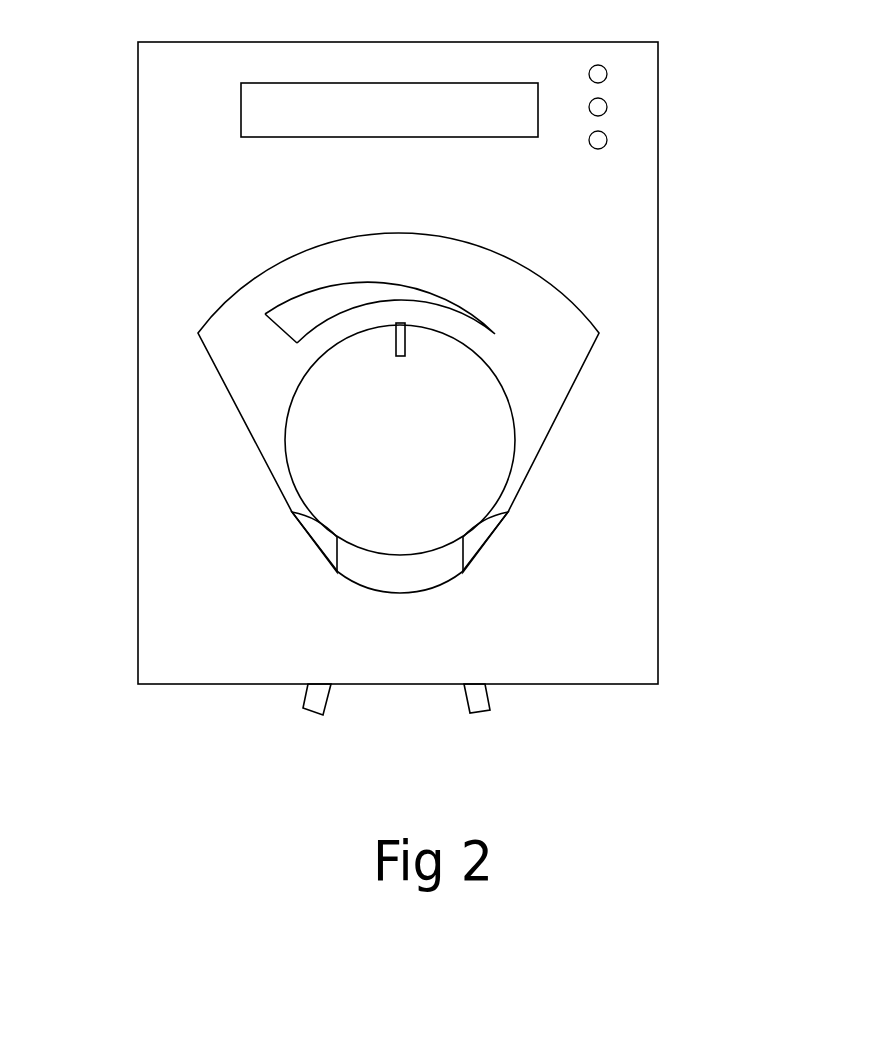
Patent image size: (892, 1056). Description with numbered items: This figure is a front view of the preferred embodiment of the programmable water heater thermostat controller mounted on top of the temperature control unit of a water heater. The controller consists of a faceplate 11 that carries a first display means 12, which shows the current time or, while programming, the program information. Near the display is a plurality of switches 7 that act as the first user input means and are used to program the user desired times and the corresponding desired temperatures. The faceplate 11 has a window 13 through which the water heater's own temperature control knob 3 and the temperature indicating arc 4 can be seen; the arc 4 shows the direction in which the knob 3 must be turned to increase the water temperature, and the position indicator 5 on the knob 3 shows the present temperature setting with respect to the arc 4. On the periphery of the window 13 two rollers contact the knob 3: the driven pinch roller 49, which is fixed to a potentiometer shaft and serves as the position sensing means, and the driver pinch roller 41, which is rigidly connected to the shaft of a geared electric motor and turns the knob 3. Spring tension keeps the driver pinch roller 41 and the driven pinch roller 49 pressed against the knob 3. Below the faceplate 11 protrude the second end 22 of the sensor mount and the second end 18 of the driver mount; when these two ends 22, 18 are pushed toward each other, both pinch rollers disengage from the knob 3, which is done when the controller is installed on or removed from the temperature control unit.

The faceplate 11 is at (658, 425).
The first display means 12 is at (241, 108).
The plurality of switches 7 is at (607, 68).
The window 13 is at (217, 372).
The arc 4 is at (298, 293).
The temperature control knob 3 is at (517, 427).
The position indicator 5 is at (405, 343).
The driven pinch roller 49 is at (337, 547).
The driver pinch roller 41 is at (475, 548).
The second end of sensor mount 22 is at (305, 698).
The second end of driver mount 18 is at (490, 700).